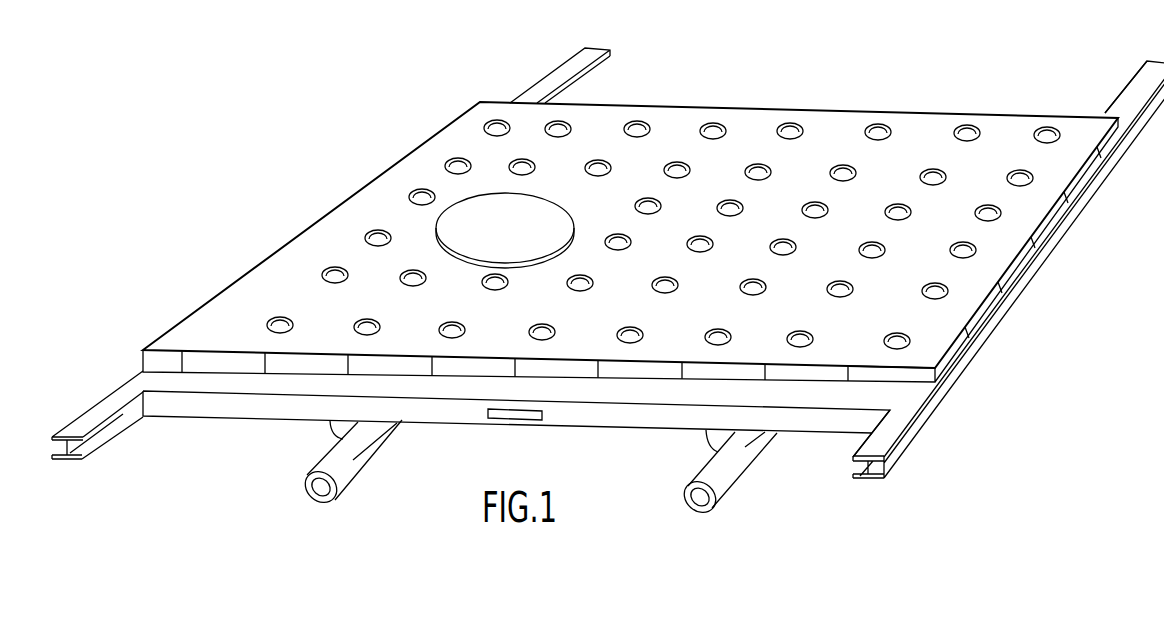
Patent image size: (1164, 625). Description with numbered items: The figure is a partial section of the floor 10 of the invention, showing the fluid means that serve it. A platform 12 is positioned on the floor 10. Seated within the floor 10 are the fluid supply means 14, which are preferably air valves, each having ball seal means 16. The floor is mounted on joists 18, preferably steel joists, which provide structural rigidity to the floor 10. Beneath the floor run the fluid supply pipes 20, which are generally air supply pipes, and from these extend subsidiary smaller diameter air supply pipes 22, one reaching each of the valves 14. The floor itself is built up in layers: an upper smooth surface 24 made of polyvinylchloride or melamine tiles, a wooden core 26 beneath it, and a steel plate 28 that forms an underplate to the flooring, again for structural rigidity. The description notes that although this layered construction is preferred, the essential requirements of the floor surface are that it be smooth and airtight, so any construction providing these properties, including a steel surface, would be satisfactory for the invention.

The floor 10 is at (994, 178).
The platform 12 is at (517, 257).
The fluid supply means 14 is at (341, 250).
The ball seal means 16 is at (482, 285).
The joists 18 is at (600, 70).
The fluid supply pipes 20 is at (336, 474).
The subsidiary smaller diameter air supply pipes 22 is at (710, 447).
The upper smooth surface 24 is at (1037, 211).
The wooden core 26 is at (917, 379).
The steel plate 28 is at (800, 414).